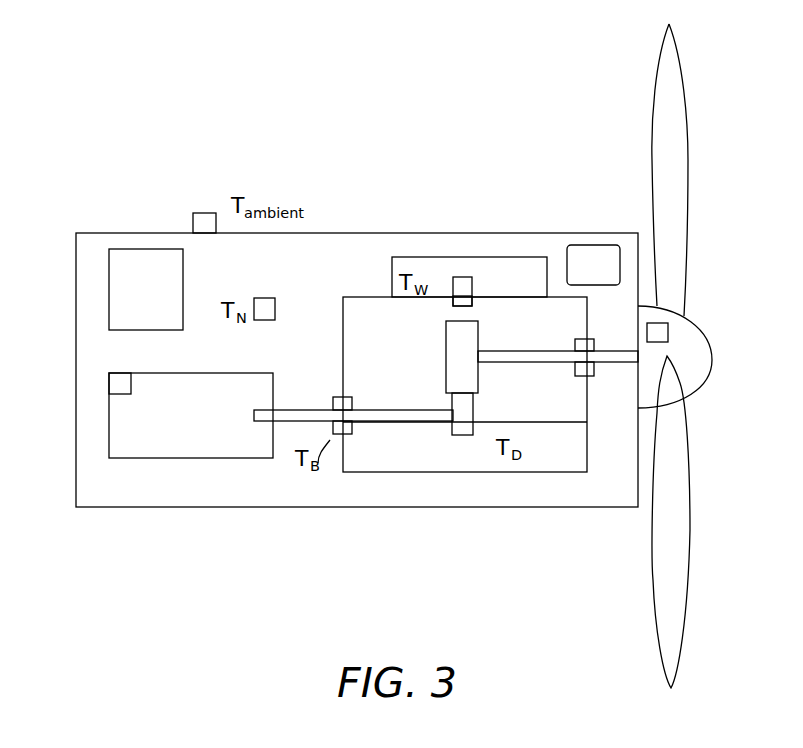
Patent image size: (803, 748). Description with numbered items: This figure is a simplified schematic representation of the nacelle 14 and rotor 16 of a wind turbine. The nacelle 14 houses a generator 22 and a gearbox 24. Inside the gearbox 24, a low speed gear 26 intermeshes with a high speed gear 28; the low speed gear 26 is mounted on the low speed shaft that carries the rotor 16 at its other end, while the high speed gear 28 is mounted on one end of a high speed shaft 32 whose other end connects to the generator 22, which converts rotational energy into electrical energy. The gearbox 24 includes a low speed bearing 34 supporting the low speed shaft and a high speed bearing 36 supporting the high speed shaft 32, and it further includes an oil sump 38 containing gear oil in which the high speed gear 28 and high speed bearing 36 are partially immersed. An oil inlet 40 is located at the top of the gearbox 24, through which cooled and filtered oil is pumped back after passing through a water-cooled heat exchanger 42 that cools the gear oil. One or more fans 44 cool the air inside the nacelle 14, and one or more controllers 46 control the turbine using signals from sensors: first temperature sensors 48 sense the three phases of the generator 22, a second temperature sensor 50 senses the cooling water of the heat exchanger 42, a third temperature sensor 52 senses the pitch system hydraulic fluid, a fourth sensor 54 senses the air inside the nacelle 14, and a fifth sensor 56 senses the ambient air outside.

The nacelle 14 is at (76, 240).
The rotor 16 is at (716, 403).
The generator 22 is at (190, 458).
The gearbox 24 is at (355, 297).
The low speed gear 26 is at (446, 335).
The high speed gear 28 is at (473, 400).
The high speed shaft 32 is at (298, 410).
The low speed bearing 34 is at (590, 339).
The high speed bearing 36 is at (342, 397).
The oil sump 38 is at (565, 472).
The oil inlet 40 is at (472, 302).
The water-cooled heat exchanger 42 is at (405, 257).
The fan 44 is at (592, 245).
The controller 46 is at (128, 249).
The first temperature sensor 48 is at (131, 384).
The second temperature sensor 50 is at (460, 277).
The third temperature sensor 52 is at (668, 332).
The fourth sensor 54 is at (263, 298).
The fifth sensor 56 is at (203, 213).